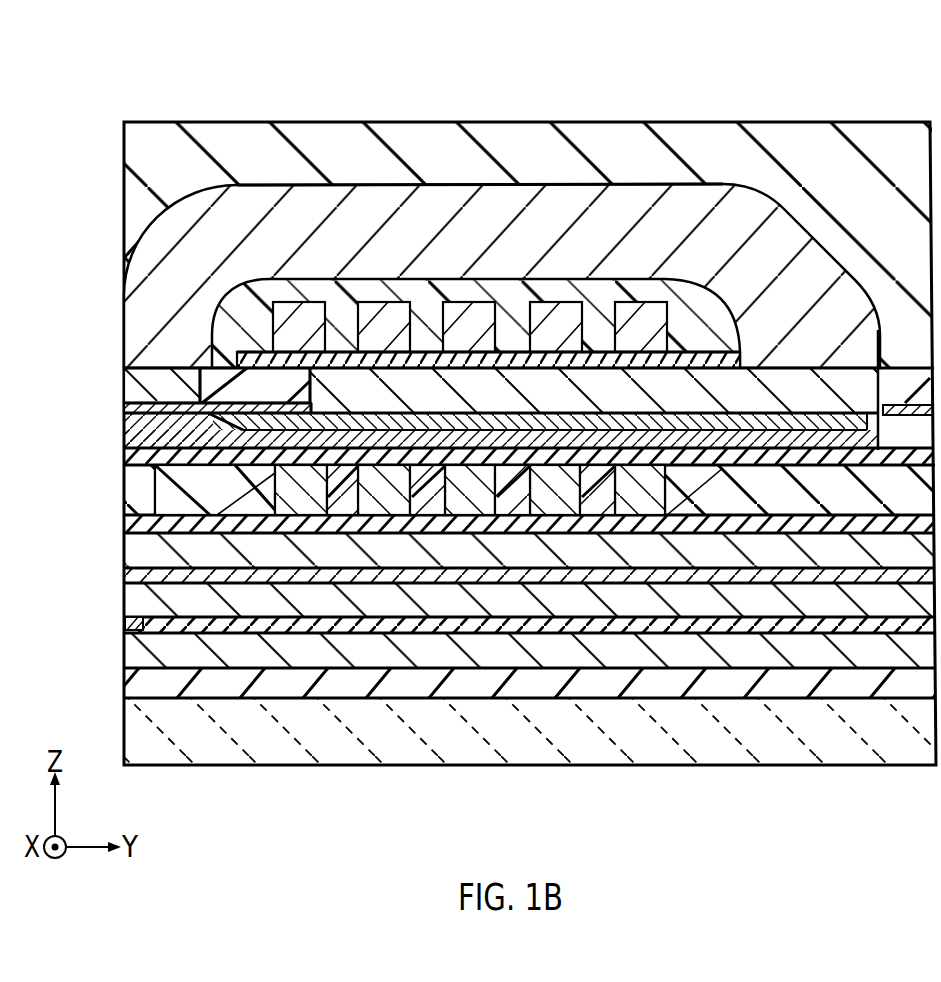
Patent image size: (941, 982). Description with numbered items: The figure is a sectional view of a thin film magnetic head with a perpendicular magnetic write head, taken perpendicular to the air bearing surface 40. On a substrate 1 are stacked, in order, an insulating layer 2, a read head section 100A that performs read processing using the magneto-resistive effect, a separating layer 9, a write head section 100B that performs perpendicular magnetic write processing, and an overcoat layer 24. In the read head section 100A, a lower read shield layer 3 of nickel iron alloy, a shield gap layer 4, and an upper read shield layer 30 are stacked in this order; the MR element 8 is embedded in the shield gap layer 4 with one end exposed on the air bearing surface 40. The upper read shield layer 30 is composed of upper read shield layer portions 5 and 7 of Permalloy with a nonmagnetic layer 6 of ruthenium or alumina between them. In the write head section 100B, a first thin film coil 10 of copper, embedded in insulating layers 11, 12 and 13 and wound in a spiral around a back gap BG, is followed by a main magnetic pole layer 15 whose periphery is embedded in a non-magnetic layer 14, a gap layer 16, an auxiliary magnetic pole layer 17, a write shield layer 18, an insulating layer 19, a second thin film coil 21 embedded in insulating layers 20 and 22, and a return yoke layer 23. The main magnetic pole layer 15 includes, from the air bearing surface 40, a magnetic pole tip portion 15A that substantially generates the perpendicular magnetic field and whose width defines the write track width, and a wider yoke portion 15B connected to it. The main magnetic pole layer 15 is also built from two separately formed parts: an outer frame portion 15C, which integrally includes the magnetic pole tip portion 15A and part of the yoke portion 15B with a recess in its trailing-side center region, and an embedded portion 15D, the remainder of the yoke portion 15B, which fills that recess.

The air bearing surface 40 is at (119, 157).
The overcoat layer 24 is at (832, 132).
The return yoke layer 23 is at (180, 410).
The insulating layer 22 is at (693, 300).
The second thin film coil 21 is at (553, 320).
The insulating layer 20 is at (634, 366).
The auxiliary magnetic pole layer 17 is at (477, 383).
The write shield layer 18 is at (145, 380).
The main magnetic pole layer 15 is at (529, 414).
The magnetic pole tip portion 15A is at (258, 395).
The yoke portion 15B is at (345, 412).
The outer frame portion 15C is at (152, 437).
The embedded portion 15D is at (225, 423).
The non-magnetic layer 14 is at (882, 366).
The gap layer 16 is at (395, 458).
The insulating layer 19 is at (290, 468).
The insulating layer 13 is at (425, 498).
The insulating layer 11 is at (472, 498).
The first thin film coil 10 is at (512, 505).
The insulating layer 12 is at (905, 502).
The separating layer 9 is at (556, 524).
The upper read shield layer 30 is at (529, 705).
The upper read shield layer portion 7 is at (603, 552).
The nonmagnetic layer 6 is at (653, 587).
The upper read shield layer portion 5 is at (712, 605).
The shield gap layer 4 is at (758, 630).
The lower read shield layer 3 is at (800, 655).
The insulating layer 2 is at (843, 690).
The substrate 1 is at (880, 755).
The MR element 8 is at (130, 632).
The back gap BG is at (808, 342).
The write head section 100B is at (100, 185).
The read head section 100A is at (100, 533).